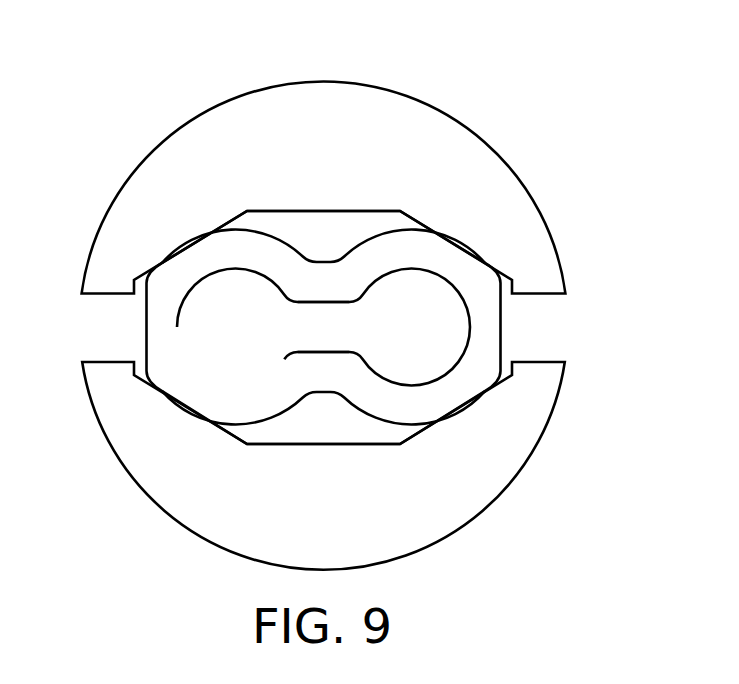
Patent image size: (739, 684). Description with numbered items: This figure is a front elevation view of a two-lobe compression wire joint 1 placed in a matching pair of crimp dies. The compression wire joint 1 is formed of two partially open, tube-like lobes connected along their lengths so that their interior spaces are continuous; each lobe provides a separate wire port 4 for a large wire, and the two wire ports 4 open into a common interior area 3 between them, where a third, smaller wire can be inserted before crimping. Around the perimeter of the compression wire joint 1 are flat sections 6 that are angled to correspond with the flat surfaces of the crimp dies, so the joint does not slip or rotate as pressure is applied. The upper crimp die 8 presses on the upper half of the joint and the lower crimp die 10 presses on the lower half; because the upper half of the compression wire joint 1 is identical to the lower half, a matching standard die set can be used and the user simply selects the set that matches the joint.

The compression wire joint 1 is at (586, 330).
The common interior area 3 is at (313, 338).
The wire port 4 is at (223, 332).
The flat section 6 is at (463, 242).
The upper crimp die 8 is at (390, 115).
The lower crimp die 10 is at (418, 520).